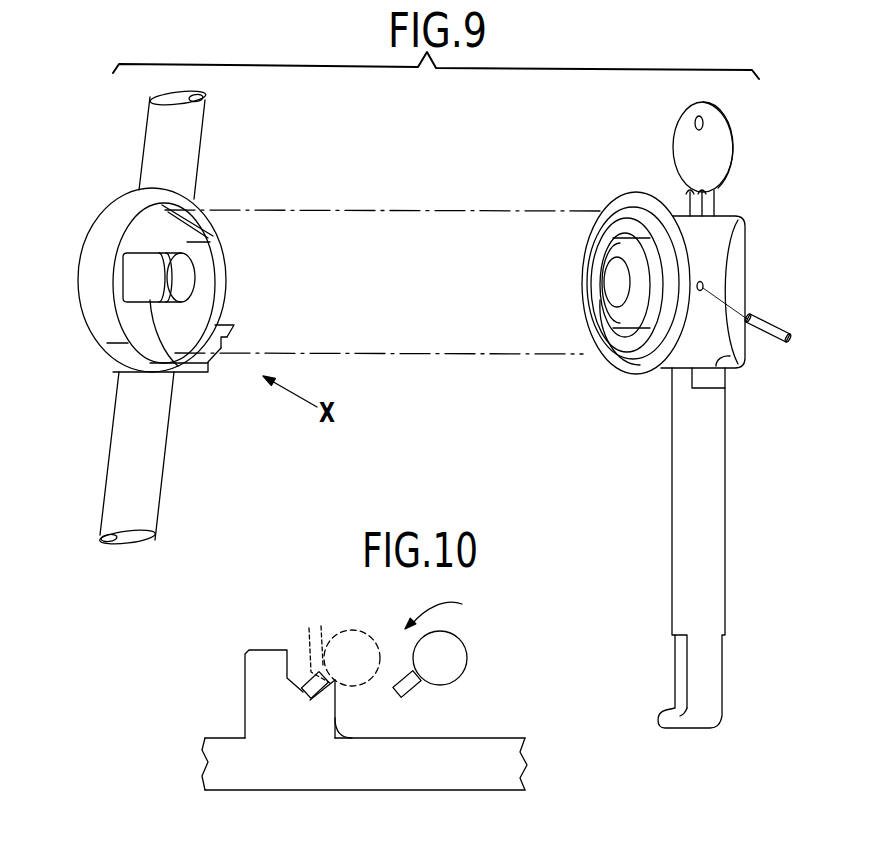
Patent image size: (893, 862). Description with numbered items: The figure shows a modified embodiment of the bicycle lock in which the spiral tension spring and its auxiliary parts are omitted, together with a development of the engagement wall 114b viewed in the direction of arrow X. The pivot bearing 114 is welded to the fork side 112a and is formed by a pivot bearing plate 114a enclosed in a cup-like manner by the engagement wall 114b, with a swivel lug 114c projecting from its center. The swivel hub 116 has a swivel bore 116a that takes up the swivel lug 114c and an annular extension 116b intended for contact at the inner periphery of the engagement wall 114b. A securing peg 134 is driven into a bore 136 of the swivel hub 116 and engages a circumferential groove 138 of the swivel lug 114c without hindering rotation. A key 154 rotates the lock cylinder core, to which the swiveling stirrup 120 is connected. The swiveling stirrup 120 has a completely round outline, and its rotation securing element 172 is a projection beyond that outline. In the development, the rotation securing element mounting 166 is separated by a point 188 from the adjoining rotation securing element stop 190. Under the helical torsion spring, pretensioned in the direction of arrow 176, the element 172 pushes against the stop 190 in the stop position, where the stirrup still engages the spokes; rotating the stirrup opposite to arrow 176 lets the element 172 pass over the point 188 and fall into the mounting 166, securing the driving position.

In FIG. 9, the fork side 112a is at (192, 131).
In FIG. 9, the pivot bearing 114 is at (174, 290).
In FIG. 9, the pivot bearing plate 114a is at (167, 325).
In FIG. 9, the engagement wall 114b is at (110, 212).
In FIG. 10, the engagement wall 114b is at (330, 772).
In FIG. 9, the swivel lug 114c is at (142, 273).
In FIG. 9, the circumferential groove 138 is at (164, 257).
In FIG. 9, the rotation securing element stop 190 is at (232, 325).
In FIG. 10, the rotation securing element stop 190 is at (337, 718).
In FIG. 9, the rotation securing element mounting 166 is at (232, 345).
In FIG. 10, the rotation securing element mounting 166 is at (300, 693).
In FIG. 9, the swivel hub 116 is at (661, 301).
In FIG. 9, the swivel bore 116a is at (613, 278).
In FIG. 9, the annular extension 116b is at (650, 348).
In FIG. 9, the bore 136 is at (705, 287).
In FIG. 9, the key 154 is at (718, 142).
In FIG. 9, the securing peg 134 is at (777, 338).
In FIG. 9, the swiveling stirrup 120 is at (678, 529).
In FIG. 10, the swiveling stirrup 120 is at (349, 632).
In FIG. 10, the rotation securing element 172 is at (312, 630).
In FIG. 10, the arrow 176 is at (449, 604).
In FIG. 10, the point 188 is at (337, 688).